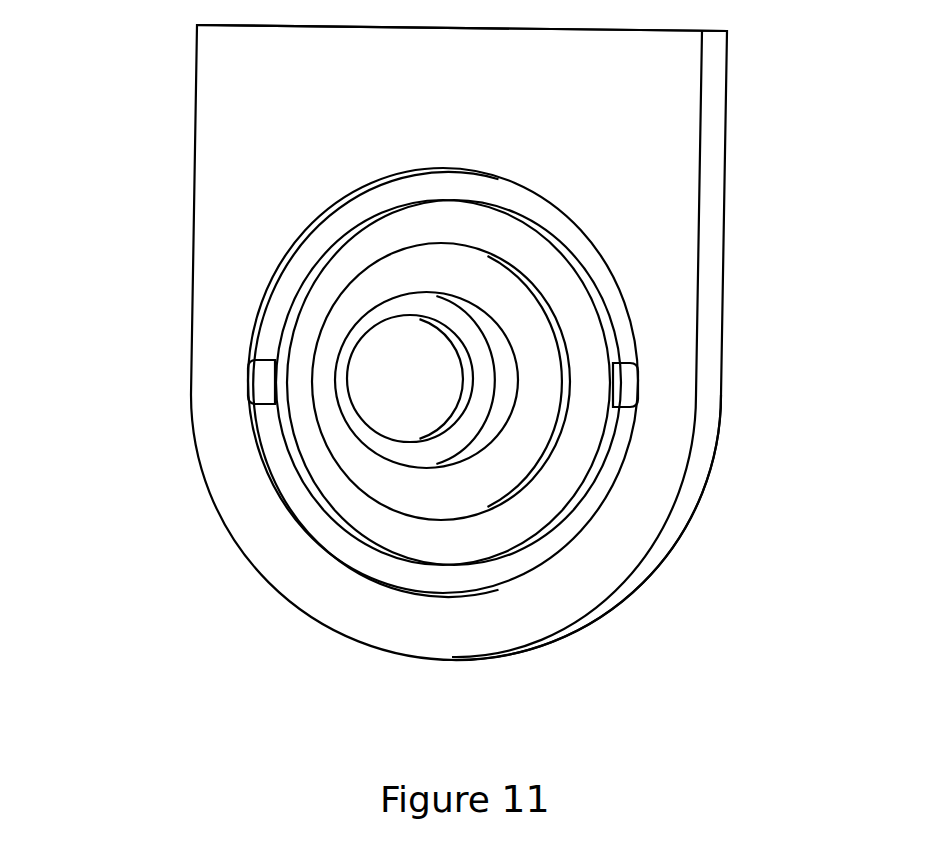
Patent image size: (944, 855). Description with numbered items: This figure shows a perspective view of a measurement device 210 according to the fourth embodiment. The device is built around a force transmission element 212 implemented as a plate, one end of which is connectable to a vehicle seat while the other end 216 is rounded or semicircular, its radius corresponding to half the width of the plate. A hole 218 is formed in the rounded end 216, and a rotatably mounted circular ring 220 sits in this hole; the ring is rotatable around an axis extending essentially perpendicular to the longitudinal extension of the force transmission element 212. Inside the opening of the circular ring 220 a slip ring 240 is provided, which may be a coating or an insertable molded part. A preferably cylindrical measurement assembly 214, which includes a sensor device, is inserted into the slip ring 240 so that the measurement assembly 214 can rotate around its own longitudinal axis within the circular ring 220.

The measurement device 210 is at (148, 100).
The force transmission element 212 is at (243, 247).
The measurement assembly 214 is at (402, 405).
The rounded end 216 is at (620, 537).
The hole 218 is at (440, 583).
The circular ring 220 is at (447, 547).
The slip ring 240 is at (547, 415).